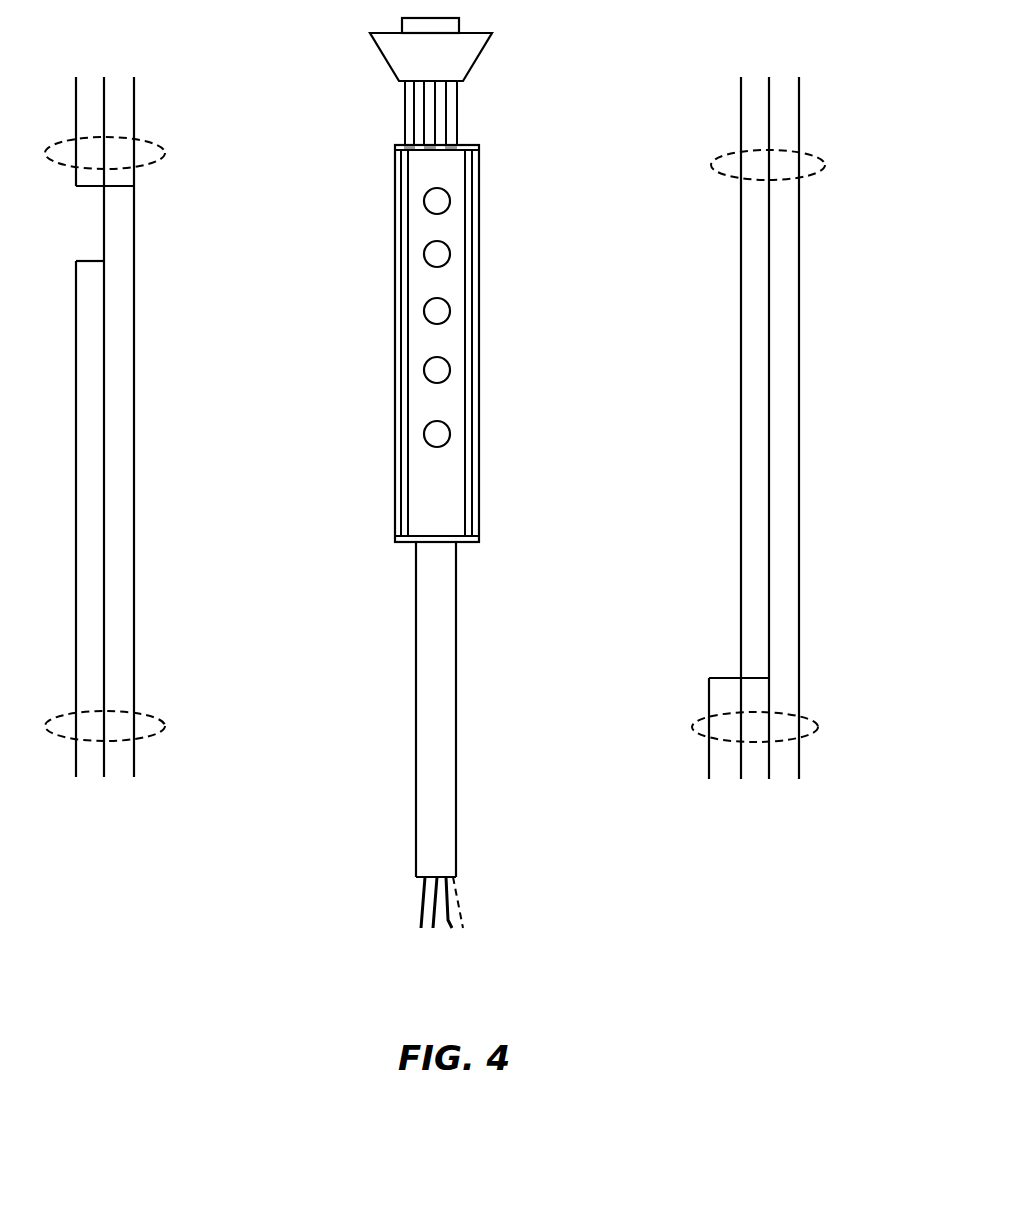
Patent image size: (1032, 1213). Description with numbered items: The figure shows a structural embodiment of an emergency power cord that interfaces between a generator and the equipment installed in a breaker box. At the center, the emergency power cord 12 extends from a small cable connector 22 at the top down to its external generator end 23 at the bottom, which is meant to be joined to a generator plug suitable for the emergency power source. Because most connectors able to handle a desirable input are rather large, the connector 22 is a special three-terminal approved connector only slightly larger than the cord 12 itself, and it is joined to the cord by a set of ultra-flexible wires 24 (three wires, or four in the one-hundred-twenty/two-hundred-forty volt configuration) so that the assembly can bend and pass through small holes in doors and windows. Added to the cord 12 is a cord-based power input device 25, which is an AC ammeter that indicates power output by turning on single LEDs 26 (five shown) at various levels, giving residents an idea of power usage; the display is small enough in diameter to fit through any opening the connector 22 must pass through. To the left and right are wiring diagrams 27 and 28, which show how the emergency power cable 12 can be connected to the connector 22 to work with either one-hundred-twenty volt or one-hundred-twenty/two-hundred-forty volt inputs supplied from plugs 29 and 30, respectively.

The emergency power cord 12 is at (432, 823).
The cable connector 22 is at (463, 59).
The generator end 23 is at (460, 905).
The ultra-flexible wires 24 is at (410, 128).
The cord-based power input device 25 is at (481, 283).
The LEDs 26 is at (440, 254).
The wiring diagram 27 is at (148, 466).
The wiring diagram 28 is at (808, 411).
The plug 29 is at (160, 720).
The plug 30 is at (818, 727).